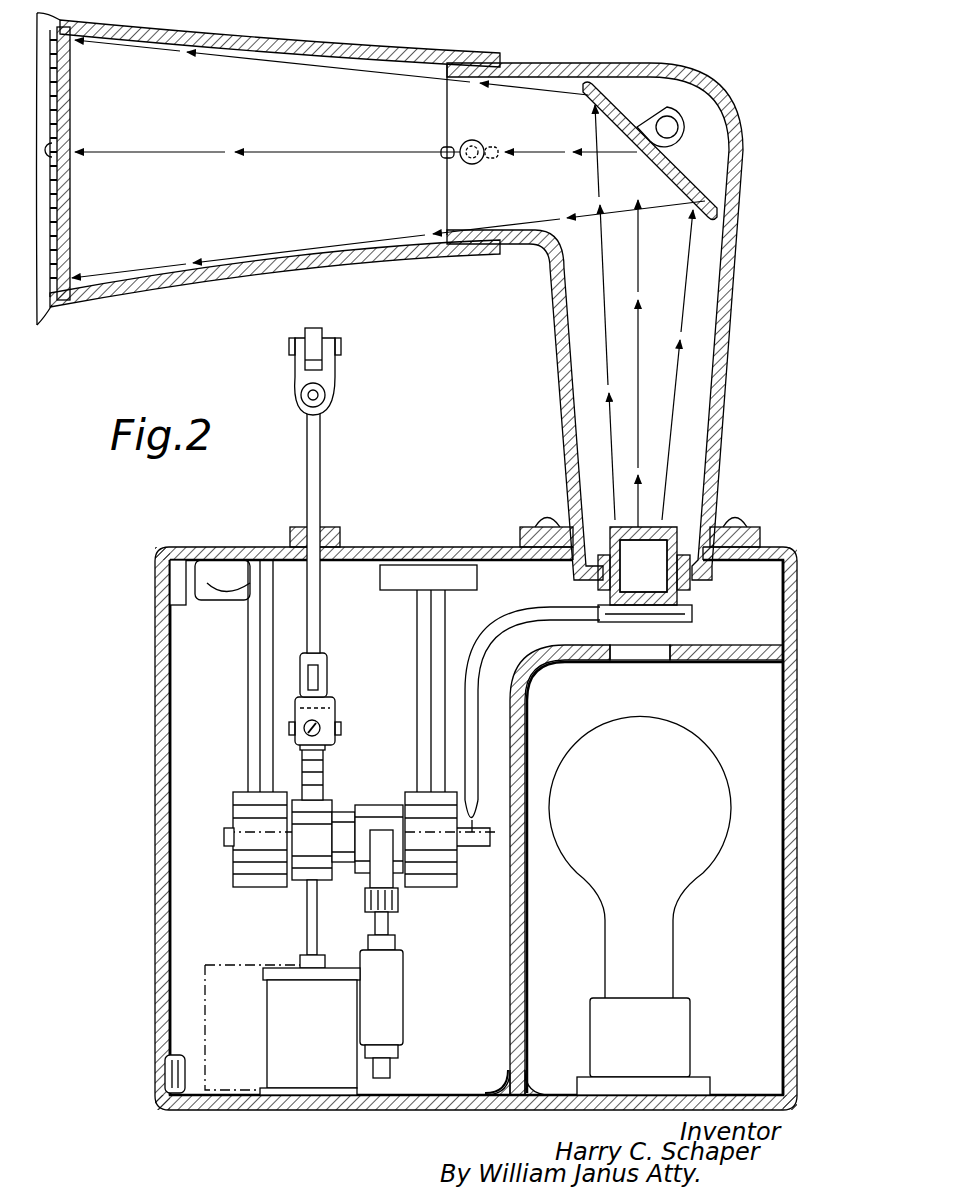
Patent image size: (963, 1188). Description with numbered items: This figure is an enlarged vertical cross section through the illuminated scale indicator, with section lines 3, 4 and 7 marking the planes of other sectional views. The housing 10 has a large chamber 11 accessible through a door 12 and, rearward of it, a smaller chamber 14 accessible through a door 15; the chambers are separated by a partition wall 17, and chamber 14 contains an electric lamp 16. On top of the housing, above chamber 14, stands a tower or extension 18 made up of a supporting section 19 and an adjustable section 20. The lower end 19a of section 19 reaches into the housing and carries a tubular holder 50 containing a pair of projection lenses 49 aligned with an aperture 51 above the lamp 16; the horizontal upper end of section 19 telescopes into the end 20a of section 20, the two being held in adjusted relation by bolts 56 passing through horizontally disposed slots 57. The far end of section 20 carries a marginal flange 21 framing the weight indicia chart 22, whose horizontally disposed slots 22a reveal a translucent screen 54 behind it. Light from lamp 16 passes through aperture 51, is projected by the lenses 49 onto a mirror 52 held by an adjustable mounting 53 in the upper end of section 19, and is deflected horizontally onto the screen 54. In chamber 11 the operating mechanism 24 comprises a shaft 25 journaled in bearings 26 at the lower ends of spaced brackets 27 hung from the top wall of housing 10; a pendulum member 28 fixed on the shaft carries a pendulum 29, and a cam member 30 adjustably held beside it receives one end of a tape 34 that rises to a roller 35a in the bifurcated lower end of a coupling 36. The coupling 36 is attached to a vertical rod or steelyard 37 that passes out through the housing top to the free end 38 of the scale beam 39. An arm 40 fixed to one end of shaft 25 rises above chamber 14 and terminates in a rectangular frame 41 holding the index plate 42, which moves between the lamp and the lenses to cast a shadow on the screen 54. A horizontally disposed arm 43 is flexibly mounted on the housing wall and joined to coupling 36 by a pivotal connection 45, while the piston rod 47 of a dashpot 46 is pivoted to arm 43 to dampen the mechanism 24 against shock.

The section line 3 is at (288, 220).
The section line 4 is at (805, 512).
The section line 7 is at (472, 272).
The housing 10 is at (434, 545).
The chamber 11 is at (190, 1005).
The door 12 is at (214, 856).
The smaller chamber 14 is at (540, 1055).
The door 15 is at (785, 929).
The electric lamp 16 is at (697, 762).
The partition wall 17 is at (508, 1022).
The tower or extension 18 is at (556, 418).
The supporting section 19 is at (728, 366).
The lower end of supporting section 19a is at (548, 525).
The adjustable section 20 is at (213, 283).
The end of adjustable section 20a is at (457, 255).
The marginal flange 21 is at (40, 324).
The weight indicia chart 22 is at (72, 152).
The horizontally disposed slots 22a is at (70, 270).
The operating mechanism 24 is at (224, 863).
The shaft 25 is at (232, 836).
The bearings 26 is at (236, 876).
The brackets 27 is at (248, 696).
The pendulum member 28 is at (366, 872).
The pendulum 29 is at (400, 980).
The cam member 30 is at (300, 876).
The tape or flexible member 34 is at (323, 779).
The collar 35a is at (322, 748).
The coupling 36 is at (335, 706).
The rod or steelyard 37 is at (320, 484).
The free end of beam 38 is at (341, 352).
The beam 39 is at (304, 333).
The arm 40 is at (500, 634).
The rectangular frame 41 is at (590, 616).
The index plate 42 is at (692, 613).
The horizontally disposed arm 43 is at (303, 673).
The pivotal connection 45 is at (325, 680).
The dashpot 46 is at (280, 1036).
The piston rod 47 is at (306, 936).
The projection lenses 49 is at (642, 595).
The tubular holder 50 is at (608, 545).
The aperture 51 is at (640, 664).
The mirror or reflecting member 52 is at (660, 178).
The adjustable mounting of mirror 53 is at (667, 127).
The translucent screen 54 is at (72, 200).
The bolts 56 is at (482, 142).
The horizontally disposed slots 57 is at (440, 152).